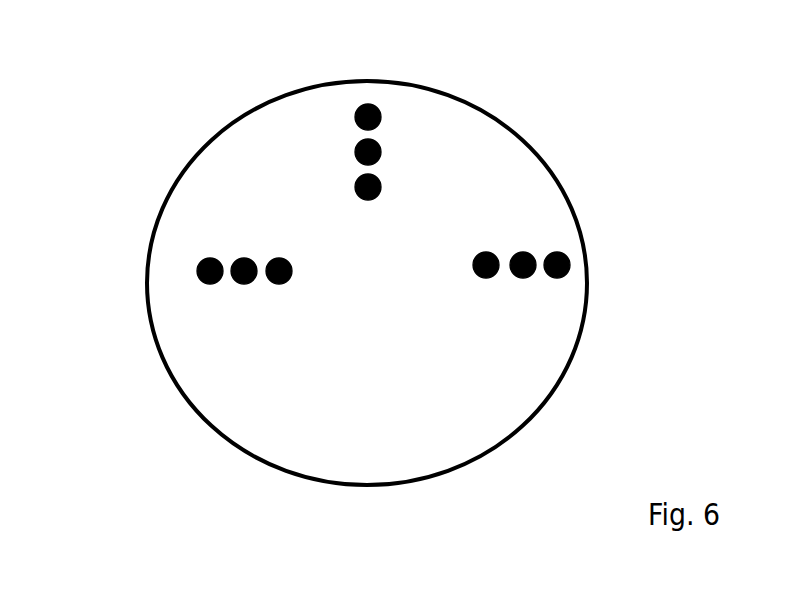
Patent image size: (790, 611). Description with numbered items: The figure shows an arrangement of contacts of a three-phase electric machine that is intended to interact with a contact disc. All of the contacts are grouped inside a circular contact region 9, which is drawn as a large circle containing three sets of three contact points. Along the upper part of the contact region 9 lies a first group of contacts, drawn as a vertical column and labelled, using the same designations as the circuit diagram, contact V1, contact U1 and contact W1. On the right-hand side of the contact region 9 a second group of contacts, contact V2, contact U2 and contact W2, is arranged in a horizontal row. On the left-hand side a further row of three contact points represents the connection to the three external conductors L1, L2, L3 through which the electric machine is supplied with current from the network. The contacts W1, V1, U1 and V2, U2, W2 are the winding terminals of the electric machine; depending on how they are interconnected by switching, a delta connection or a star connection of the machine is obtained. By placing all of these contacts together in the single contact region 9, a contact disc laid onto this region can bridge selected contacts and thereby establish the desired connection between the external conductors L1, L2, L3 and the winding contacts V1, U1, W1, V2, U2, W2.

The contact region 9 is at (440, 384).
The contact V1 is at (381, 116).
The contact U1 is at (381, 153).
The contact W1 is at (381, 186).
The contact V2 is at (488, 252).
The contact U2 is at (527, 251).
The contact W2 is at (566, 252).
The external conductor L1 is at (207, 283).
The external conductor L2 is at (245, 283).
The external conductor L3 is at (280, 283).